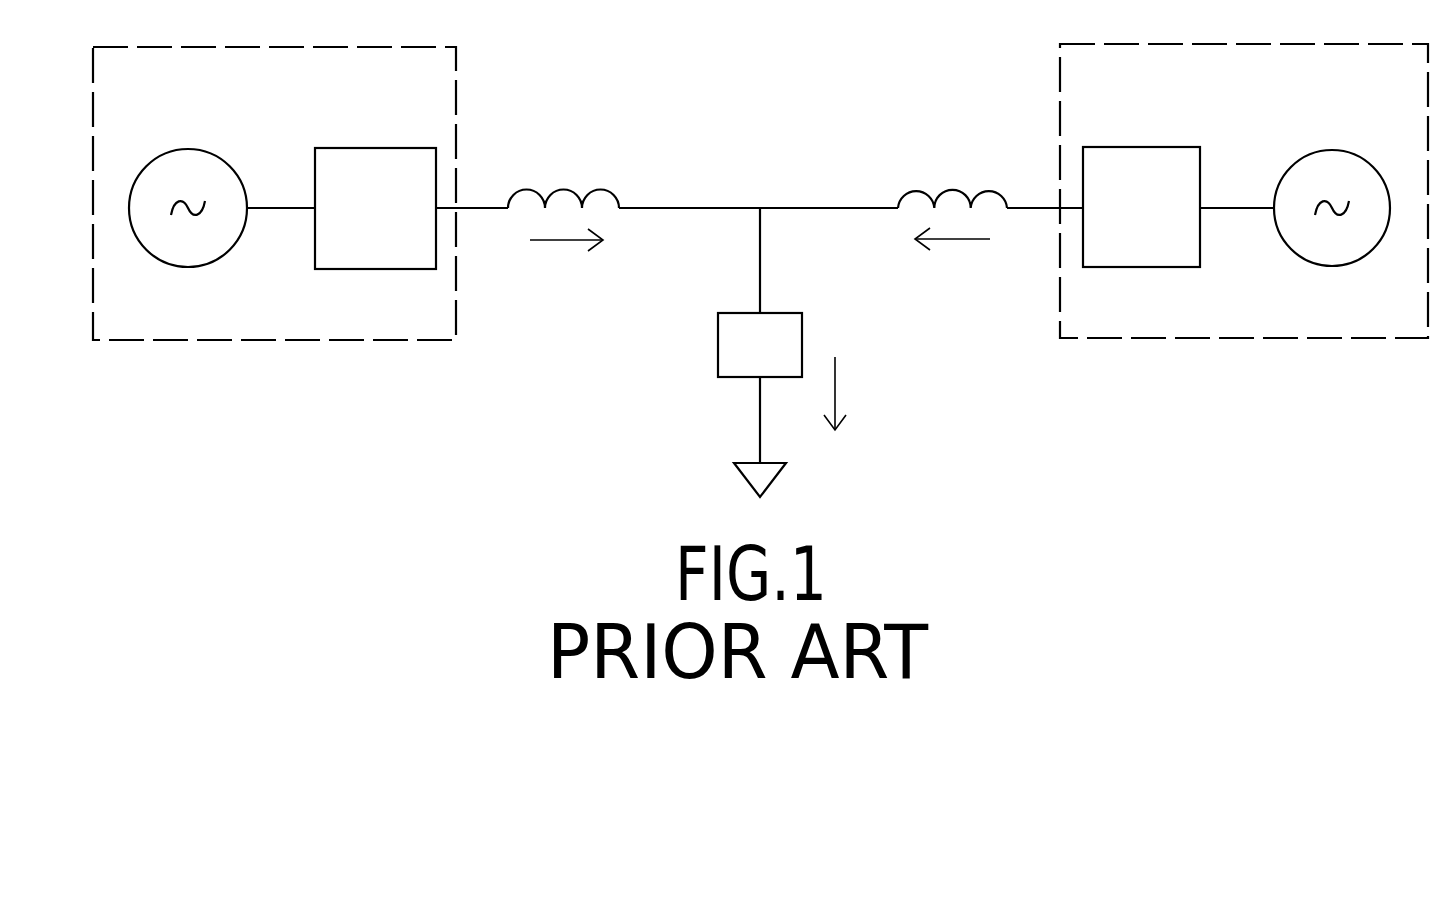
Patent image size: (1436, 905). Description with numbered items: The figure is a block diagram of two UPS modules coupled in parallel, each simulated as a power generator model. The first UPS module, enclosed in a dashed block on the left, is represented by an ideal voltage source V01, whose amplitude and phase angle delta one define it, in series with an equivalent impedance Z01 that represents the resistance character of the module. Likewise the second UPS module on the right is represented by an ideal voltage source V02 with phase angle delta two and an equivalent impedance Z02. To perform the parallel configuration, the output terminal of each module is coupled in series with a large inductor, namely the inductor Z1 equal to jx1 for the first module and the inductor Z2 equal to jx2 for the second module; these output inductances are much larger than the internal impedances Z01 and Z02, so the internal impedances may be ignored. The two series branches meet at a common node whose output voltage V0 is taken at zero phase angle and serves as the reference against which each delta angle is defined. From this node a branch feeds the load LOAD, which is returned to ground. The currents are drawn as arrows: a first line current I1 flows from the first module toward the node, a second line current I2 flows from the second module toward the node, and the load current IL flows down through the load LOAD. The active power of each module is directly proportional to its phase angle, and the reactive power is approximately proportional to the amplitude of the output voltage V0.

The ideal voltage source of first UPS module V01 is at (274, 193).
The equivalent impedance of first UPS module Z01 is at (411, 208).
The large inductor of first UPS module Z1 is at (699, 158).
The first line current I1 is at (563, 269).
The output voltage V0 is at (751, 230).
The load LOAD is at (760, 405).
The load current IL is at (868, 404).
The large inductor of second UPS module Z2 is at (986, 157).
The second line current I2 is at (954, 268).
The equivalent impedance of second UPS module Z02 is at (1178, 207).
The ideal voltage source of second UPS module V02 is at (1244, 191).